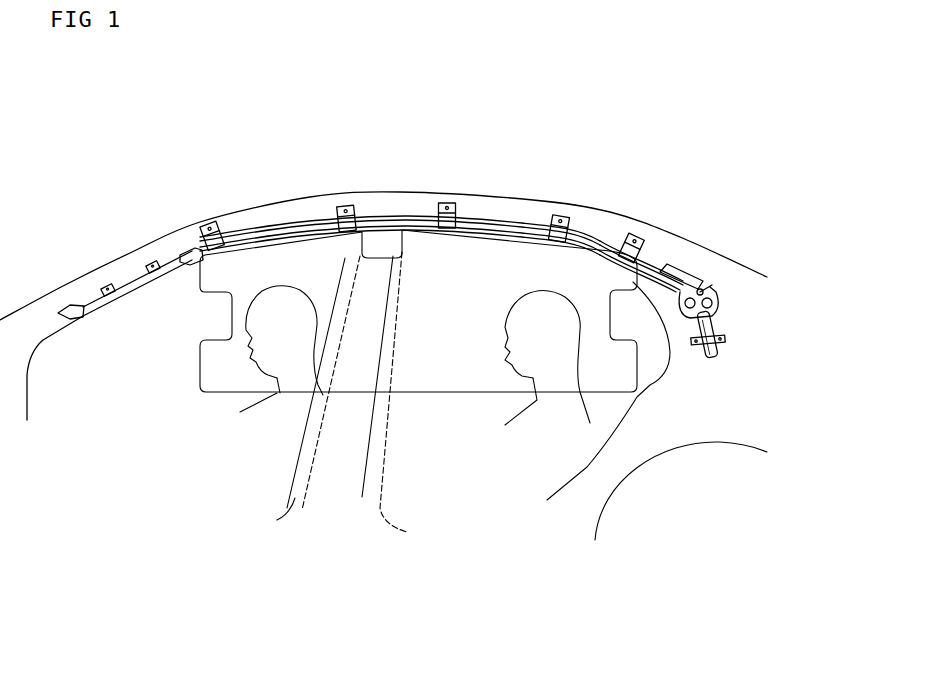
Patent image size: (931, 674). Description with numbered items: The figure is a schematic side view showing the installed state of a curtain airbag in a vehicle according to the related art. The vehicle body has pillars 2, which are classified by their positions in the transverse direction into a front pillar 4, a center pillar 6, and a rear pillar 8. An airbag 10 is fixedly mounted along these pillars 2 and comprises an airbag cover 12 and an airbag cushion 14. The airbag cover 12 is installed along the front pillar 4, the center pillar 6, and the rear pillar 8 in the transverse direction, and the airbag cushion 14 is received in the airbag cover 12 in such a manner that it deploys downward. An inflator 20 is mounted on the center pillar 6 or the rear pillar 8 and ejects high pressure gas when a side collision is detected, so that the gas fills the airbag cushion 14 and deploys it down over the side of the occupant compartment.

The pillars 2 is at (183, 175).
The front pillar 4 is at (182, 245).
The center pillar 6 is at (392, 204).
The rear pillar 8 is at (585, 221).
The airbag 10 is at (155, 302).
The airbag cover 12 is at (193, 261).
The airbag cushion 14 is at (230, 292).
The inflator 20 is at (726, 328).